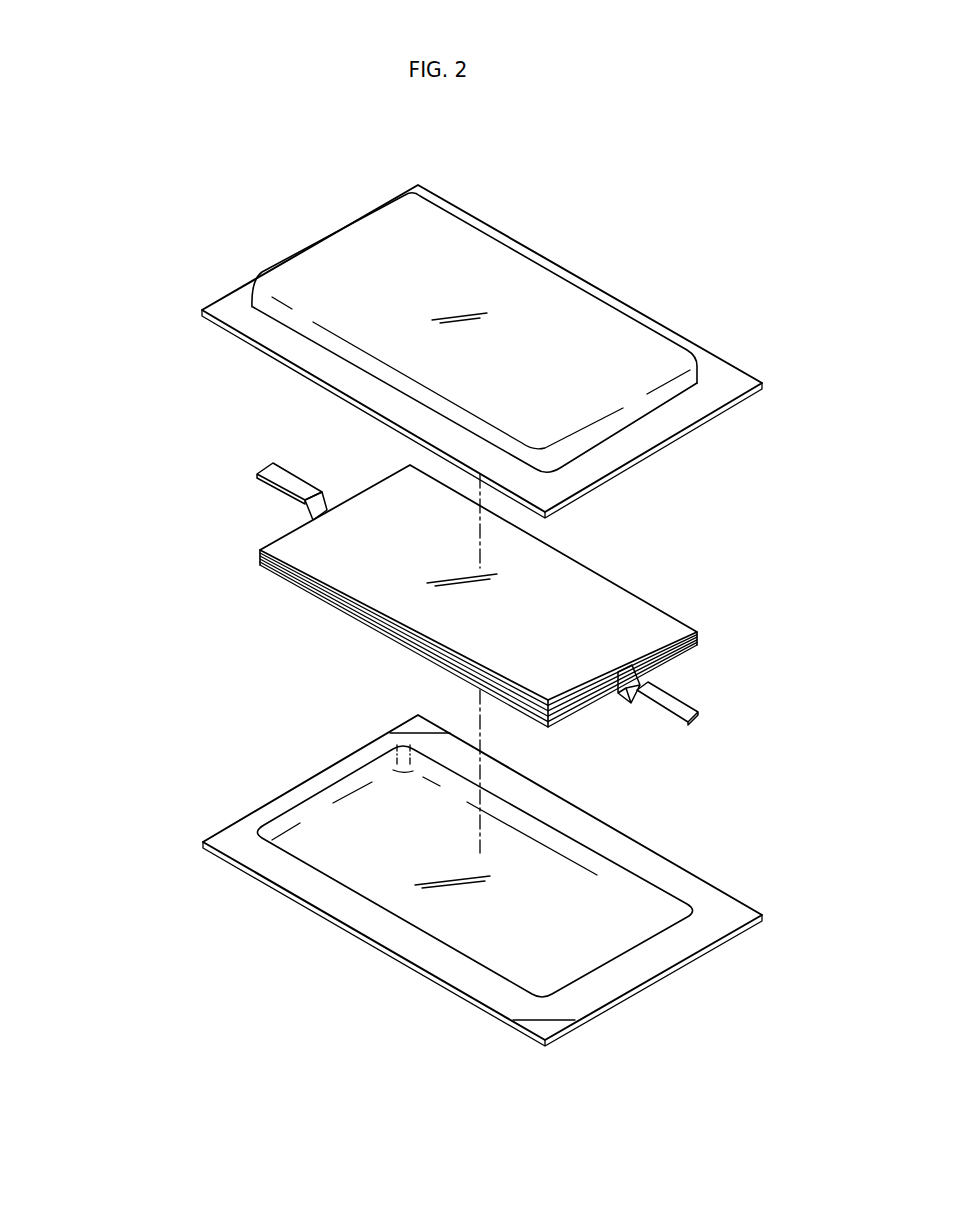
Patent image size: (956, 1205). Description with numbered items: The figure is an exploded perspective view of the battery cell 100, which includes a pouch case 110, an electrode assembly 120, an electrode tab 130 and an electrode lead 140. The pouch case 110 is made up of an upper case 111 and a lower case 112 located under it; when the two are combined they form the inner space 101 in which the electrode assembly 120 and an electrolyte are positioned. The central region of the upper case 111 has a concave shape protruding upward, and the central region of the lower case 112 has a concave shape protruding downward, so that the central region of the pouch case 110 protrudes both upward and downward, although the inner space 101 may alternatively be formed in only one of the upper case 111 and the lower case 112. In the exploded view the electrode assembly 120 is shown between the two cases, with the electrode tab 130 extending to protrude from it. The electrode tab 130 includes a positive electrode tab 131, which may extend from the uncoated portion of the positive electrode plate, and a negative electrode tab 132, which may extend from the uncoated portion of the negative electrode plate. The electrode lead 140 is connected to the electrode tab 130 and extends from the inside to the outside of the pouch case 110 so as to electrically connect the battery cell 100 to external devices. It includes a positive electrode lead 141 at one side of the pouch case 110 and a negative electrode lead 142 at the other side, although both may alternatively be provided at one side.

The battery cell 100 is at (287, 198).
The inner space 101 is at (563, 886).
The pouch case 110 is at (150, 510).
The upper case 111 is at (262, 335).
The lower case 112 is at (227, 838).
The electrode assembly 120 is at (620, 572).
The electrode tab 130 is at (662, 677).
The positive electrode tab 131 is at (617, 698).
The negative electrode tab 132 is at (322, 503).
The electrode lead 140 is at (707, 705).
The positive electrode lead 141 is at (690, 712).
The negative electrode lead 142 is at (287, 480).